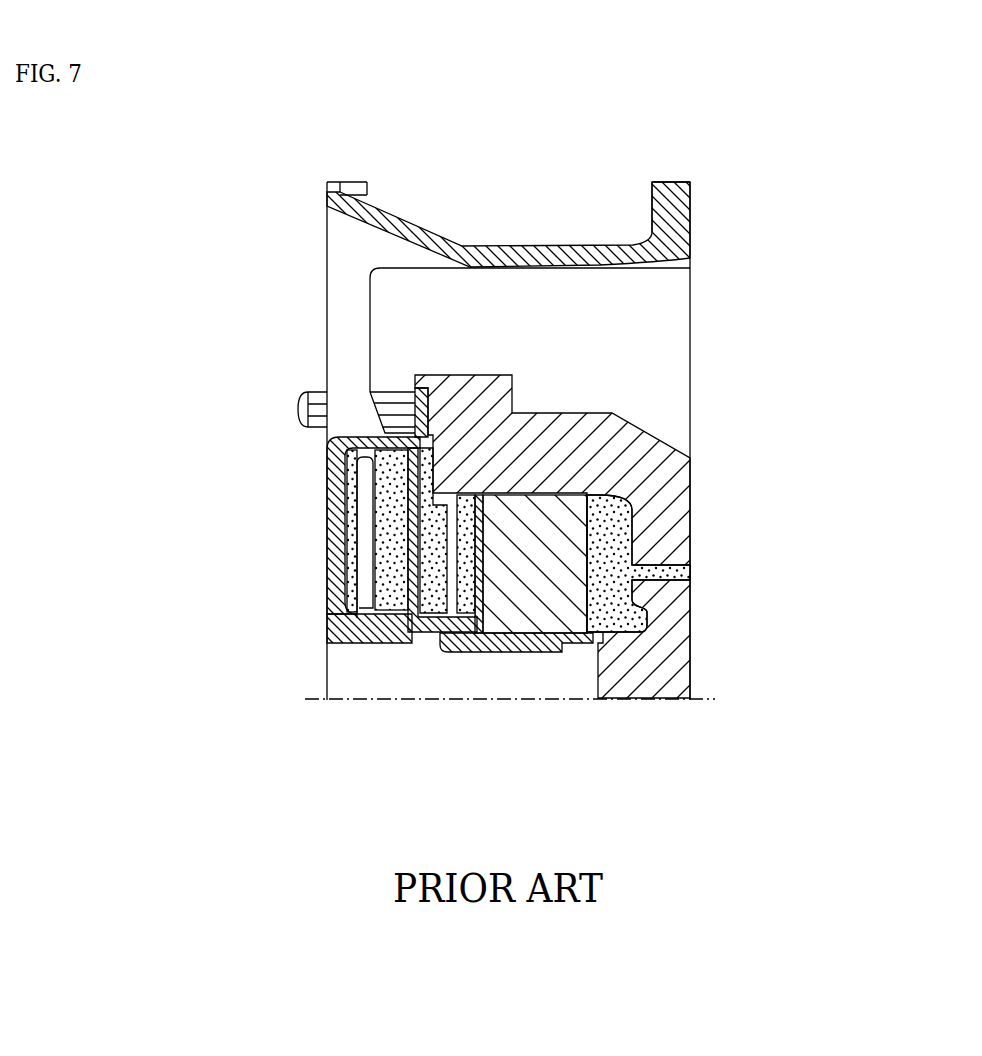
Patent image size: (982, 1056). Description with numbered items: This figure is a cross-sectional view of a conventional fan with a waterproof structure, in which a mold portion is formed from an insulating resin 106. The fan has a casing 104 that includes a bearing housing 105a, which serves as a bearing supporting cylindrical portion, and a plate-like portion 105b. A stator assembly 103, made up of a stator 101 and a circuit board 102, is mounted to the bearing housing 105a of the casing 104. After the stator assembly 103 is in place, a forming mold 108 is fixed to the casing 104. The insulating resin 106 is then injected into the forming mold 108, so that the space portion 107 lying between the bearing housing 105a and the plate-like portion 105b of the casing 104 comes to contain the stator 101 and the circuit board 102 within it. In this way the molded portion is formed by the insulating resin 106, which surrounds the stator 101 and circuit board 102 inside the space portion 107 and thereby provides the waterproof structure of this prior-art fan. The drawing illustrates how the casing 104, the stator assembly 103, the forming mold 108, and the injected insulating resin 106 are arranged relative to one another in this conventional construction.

The stator 101 is at (520, 607).
The circuit board 102 is at (420, 590).
The stator assembly 103 is at (549, 634).
The casing 104 is at (542, 255).
The bearing housing 105a is at (382, 633).
The plate-like portion 105b is at (337, 597).
The insulating resin 106 is at (309, 534).
The space portion 107 is at (330, 521).
The forming mold 108 is at (692, 468).